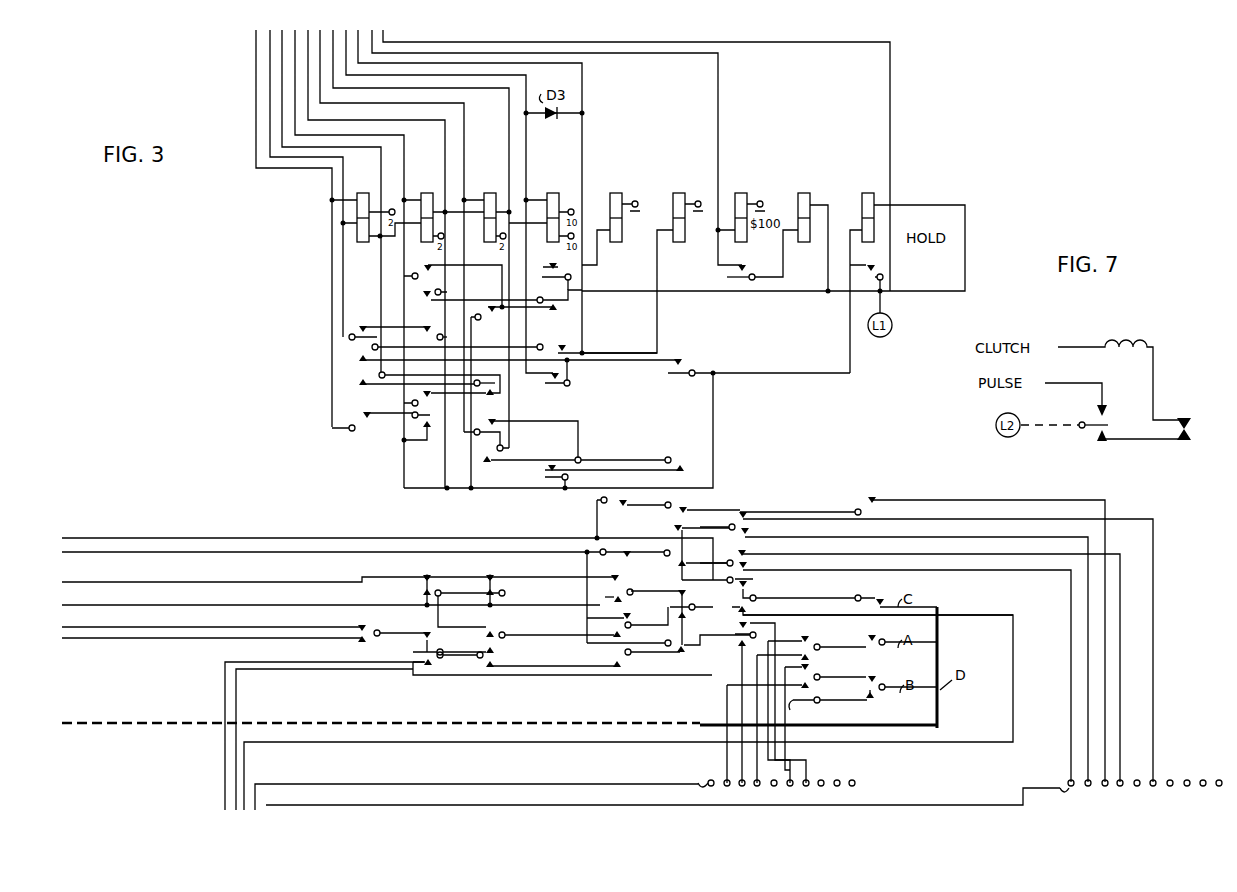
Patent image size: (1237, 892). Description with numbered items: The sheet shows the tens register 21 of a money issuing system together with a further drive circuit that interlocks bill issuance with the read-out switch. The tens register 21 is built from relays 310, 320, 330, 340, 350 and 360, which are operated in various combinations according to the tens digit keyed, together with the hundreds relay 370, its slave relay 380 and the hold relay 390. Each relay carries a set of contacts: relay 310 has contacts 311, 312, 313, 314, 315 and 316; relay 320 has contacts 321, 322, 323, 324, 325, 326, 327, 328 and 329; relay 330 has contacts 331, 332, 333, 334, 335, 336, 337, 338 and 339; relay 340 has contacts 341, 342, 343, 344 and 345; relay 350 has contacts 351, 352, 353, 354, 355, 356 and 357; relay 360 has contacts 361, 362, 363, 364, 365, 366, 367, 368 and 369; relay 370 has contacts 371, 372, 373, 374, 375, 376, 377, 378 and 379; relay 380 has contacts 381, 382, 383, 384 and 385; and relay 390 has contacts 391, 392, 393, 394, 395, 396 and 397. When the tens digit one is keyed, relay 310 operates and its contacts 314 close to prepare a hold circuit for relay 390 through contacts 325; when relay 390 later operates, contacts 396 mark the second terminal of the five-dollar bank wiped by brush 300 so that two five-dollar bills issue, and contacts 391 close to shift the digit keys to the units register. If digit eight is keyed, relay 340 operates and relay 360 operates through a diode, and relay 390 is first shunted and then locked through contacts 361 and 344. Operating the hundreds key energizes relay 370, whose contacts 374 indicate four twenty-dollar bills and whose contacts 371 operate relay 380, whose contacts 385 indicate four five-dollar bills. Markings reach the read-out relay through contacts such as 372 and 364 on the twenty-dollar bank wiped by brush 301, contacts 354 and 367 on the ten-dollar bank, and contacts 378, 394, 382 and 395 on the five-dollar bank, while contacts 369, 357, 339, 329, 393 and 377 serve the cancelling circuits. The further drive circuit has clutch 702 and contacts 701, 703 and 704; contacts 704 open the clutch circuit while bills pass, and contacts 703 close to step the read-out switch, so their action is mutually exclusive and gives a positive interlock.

In FIG. 3, the tens register 21 is at (150, 309).
In FIG. 3, the brush 300 is at (684, 780).
In FIG. 3, the brush 301 is at (1049, 784).
In FIG. 3, the relay 310 is at (351, 196).
In FIG. 3, the contacts 311 is at (355, 329).
In FIG. 3, the contacts 312 is at (364, 361).
In FIG. 3, the contacts 313 is at (364, 385).
In FIG. 3, the contacts 314 is at (380, 421).
In FIG. 3, the contacts 315 is at (366, 630).
In FIG. 3, the contacts 316 is at (360, 644).
In FIG. 3, the relay 320 is at (415, 196).
In FIG. 3, the contacts 321 is at (417, 272).
In FIG. 3, the contacts 322 is at (423, 299).
In FIG. 3, the contacts 323 is at (434, 335).
In FIG. 3, the contacts 324 is at (413, 394).
In FIG. 3, the contacts 325 is at (434, 431).
In FIG. 3, the contacts 326 is at (410, 585).
In FIG. 3, the contacts 327 is at (412, 596).
In FIG. 3, the contacts 328 is at (416, 650).
In FIG. 3, the contacts 329 is at (412, 669).
In FIG. 3, the relay 330 is at (478, 196).
In FIG. 3, the contacts 331 is at (502, 316).
In FIG. 3, the contacts 332 is at (501, 391).
In FIG. 3, the contacts 333 is at (508, 433).
In FIG. 3, the contacts 334 is at (481, 464).
In FIG. 3, the contacts 335 is at (497, 591).
In FIG. 3, the contacts 336 is at (482, 594).
In FIG. 3, the contacts 337 is at (502, 637).
In FIG. 3, the contacts 338 is at (462, 627).
In FIG. 3, the contacts 339 is at (479, 659).
In FIG. 3, the relay 340 is at (541, 196).
In FIG. 3, the contacts 341 is at (545, 268).
In FIG. 3, the contacts 342 is at (570, 302).
In FIG. 3, the contacts 343 is at (578, 346).
In FIG. 3, the contacts 344 is at (552, 384).
In FIG. 3, the contacts 345 is at (545, 473).
In FIG. 3, the relay 350 is at (604, 196).
In FIG. 3, the contacts 351 is at (628, 505).
In FIG. 3, the contacts 352 is at (630, 556).
In FIG. 3, the contacts 353 is at (627, 589).
In FIG. 3, the contacts 354 is at (625, 598).
In FIG. 3, the contacts 355 is at (627, 616).
In FIG. 3, the contacts 356 is at (623, 632).
In FIG. 3, the contacts 357 is at (624, 654).
In FIG. 3, the relay 360 is at (667, 196).
In FIG. 3, the contacts 361 is at (690, 367).
In FIG. 3, the contacts 362 is at (689, 462).
In FIG. 3, the contacts 363 is at (691, 511).
In FIG. 3, the contacts 364 is at (674, 535).
In FIG. 3, the contacts 365 is at (702, 563).
In FIG. 3, the contacts 366 is at (669, 558).
In FIG. 3, the contacts 367 is at (697, 593).
In FIG. 3, the contacts 368 is at (687, 615).
In FIG. 3, the contacts 369 is at (668, 651).
In FIG. 3, the $100 relay 370 is at (729, 196).
In FIG. 3, the contacts 371 is at (733, 275).
In FIG. 3, the contacts 372 is at (742, 514).
In FIG. 3, the contacts 373 is at (750, 538).
In FIG. 3, the contacts 374 is at (742, 554).
In FIG. 3, the contacts 375 is at (750, 570).
In FIG. 3, the contacts 376 is at (750, 592).
In FIG. 3, the contacts 377 is at (750, 615).
In FIG. 3, the contacts 378 is at (762, 633).
In FIG. 3, the contacts 379 is at (718, 642).
In FIG. 3, the slave relay 380 is at (792, 196).
In FIG. 3, the contacts 381 is at (790, 633).
In FIG. 3, the contacts 382 is at (816, 652).
In FIG. 3, the contacts 383 is at (816, 676).
In FIG. 3, the contacts 384 is at (816, 683).
In FIG. 3, the contacts 385 is at (828, 708).
In FIG. 3, the hold relay 390 is at (856, 196).
In FIG. 3, the contacts 391 is at (886, 274).
In FIG. 3, the contacts 392 is at (863, 506).
In FIG. 3, the contacts 393 is at (881, 597).
In FIG. 3, the contacts 394 is at (877, 640).
In FIG. 3, the contacts 395 is at (883, 644).
In FIG. 3, the contacts 396 is at (880, 673).
In FIG. 3, the contacts 397 is at (882, 690).
In FIG. 7, the contacts 701 is at (1192, 424).
In FIG. 7, the clutch 702 is at (1126, 339).
In FIG. 7, the contacts 703 is at (1109, 422).
In FIG. 7, the contacts 704 is at (1113, 444).